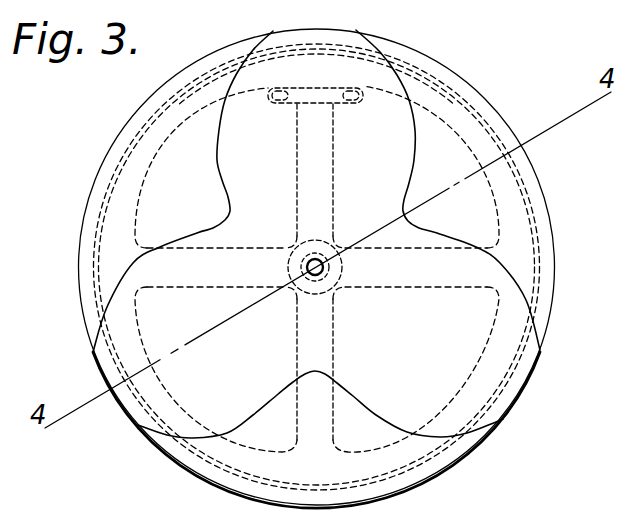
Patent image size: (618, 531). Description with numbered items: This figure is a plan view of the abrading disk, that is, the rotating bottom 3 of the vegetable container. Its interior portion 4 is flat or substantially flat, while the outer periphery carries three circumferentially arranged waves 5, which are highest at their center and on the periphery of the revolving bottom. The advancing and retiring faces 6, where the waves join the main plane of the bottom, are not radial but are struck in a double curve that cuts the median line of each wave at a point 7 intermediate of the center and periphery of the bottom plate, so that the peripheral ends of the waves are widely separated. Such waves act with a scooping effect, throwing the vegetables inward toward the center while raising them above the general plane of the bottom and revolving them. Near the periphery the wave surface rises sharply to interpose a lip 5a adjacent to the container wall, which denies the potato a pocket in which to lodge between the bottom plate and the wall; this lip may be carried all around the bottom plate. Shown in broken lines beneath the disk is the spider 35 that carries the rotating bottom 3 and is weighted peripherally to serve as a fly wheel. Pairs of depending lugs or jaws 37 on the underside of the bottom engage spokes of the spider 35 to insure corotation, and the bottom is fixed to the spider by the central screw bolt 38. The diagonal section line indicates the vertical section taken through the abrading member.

The rotating bottom 3 is at (556, 266).
The interior portion 4 is at (317, 269).
The circumferentially arranged waves 5 is at (320, 303).
The lip 5a is at (563, 127).
The advancing and retiring faces 6 is at (411, 160).
The point 7 is at (231, 212).
The spider 35 is at (205, 289).
The depending lugs or jaws 37 is at (297, 105).
The central screw bolt 38 is at (326, 258).